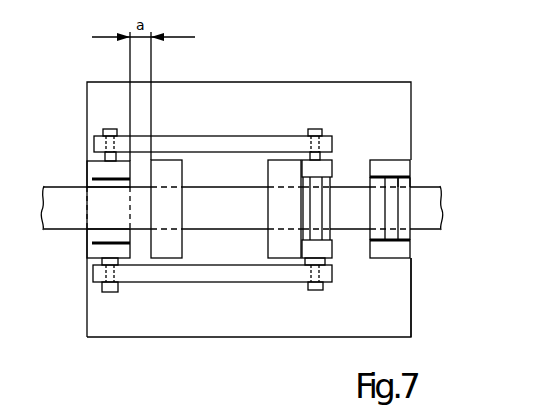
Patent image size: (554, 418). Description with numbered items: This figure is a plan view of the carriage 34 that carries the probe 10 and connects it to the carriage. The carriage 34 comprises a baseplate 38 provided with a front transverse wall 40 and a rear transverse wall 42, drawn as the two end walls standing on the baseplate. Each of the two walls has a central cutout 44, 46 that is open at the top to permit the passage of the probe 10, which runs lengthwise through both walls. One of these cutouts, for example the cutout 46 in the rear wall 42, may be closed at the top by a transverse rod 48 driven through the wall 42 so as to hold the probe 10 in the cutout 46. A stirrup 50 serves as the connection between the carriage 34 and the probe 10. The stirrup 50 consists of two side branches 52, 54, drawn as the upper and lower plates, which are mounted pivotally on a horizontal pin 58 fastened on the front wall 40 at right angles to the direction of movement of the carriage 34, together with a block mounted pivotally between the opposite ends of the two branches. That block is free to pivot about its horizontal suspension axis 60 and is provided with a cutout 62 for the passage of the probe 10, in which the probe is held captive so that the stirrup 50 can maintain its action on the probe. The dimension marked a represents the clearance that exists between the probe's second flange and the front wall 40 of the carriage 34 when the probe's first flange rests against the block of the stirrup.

The probe 10 is at (443, 198).
The carriage 34 is at (430, 90).
The baseplate 38 is at (412, 285).
The front transverse wall 40 is at (87, 243).
The rear transverse wall 42 is at (412, 164).
The central cutout 44 is at (98, 182).
The central cutout 46 is at (412, 233).
The transverse rod 48 is at (400, 183).
The stirrup 50 is at (233, 138).
The side branch 52 is at (250, 135).
The side branch 54 is at (210, 282).
The horizontal pin 58 is at (107, 287).
The horizontal suspension axis 60 is at (316, 290).
The cutout 62 is at (332, 182).